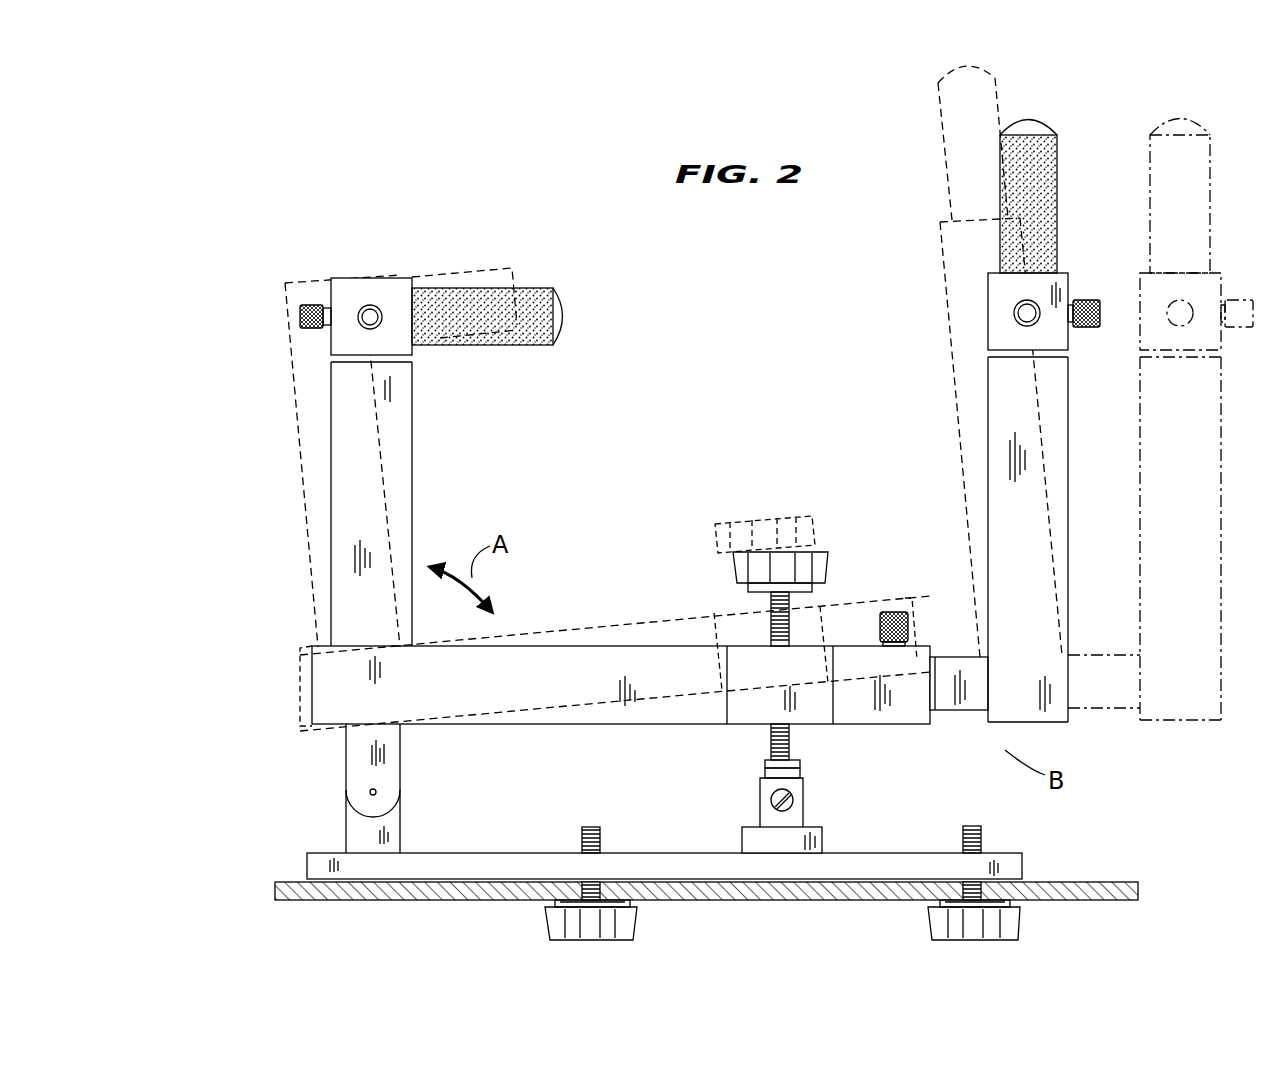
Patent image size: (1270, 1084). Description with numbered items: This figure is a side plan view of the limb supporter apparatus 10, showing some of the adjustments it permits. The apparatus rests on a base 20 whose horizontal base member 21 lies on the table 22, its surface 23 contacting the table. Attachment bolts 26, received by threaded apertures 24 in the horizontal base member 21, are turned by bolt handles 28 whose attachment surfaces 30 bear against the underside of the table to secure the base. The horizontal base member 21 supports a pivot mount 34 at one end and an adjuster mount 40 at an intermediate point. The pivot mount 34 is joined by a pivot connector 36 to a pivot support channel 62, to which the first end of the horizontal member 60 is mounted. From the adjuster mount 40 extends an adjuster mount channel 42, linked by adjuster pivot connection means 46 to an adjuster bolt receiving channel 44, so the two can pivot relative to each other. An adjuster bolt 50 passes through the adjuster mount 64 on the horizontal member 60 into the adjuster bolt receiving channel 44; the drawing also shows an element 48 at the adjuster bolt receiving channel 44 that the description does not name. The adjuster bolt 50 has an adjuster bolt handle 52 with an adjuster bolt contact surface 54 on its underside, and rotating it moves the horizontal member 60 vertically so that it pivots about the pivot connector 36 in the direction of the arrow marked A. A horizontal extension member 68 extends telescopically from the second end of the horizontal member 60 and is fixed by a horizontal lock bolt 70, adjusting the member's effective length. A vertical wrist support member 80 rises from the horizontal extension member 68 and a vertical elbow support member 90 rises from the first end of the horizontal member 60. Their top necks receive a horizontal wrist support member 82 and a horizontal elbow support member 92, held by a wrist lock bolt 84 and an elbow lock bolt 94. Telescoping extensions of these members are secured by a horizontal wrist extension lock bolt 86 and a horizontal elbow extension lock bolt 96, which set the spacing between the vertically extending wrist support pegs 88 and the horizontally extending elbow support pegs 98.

The limb supporter apparatus 10 is at (483, 192).
The base 20 is at (1097, 852).
The horizontal base member 21 is at (297, 862).
The table 22 is at (480, 853).
The upper surface 23 is at (330, 902).
The threaded apertures 24 is at (603, 853).
The attachment bolts 26 is at (592, 828).
The bolt handles 28 is at (550, 925).
The attachment surfaces 30 is at (630, 905).
The pivot mount 34 is at (360, 838).
The pivot connector 36 is at (370, 792).
The adjuster mount 40 is at (745, 835).
The adjuster mount channel 42 is at (803, 810).
The adjuster bolt receiving channel 44 is at (800, 775).
The adjuster pivot connection means 46 is at (793, 800).
The washer 48 is at (765, 765).
The adjuster bolt 50 is at (790, 740).
The adjuster bolt handle 52 is at (826, 552).
The adjuster bolt contact surface 54 is at (812, 588).
The horizontal member 60 is at (580, 675).
The pivot support channel 62 is at (365, 757).
The adjuster mount 64 is at (750, 660).
The horizontal extension member 68 is at (1041, 744).
The horizontal lock bolt 70 is at (900, 612).
The vertical wrist support member 80 is at (1068, 518).
The horizontal wrist support member 82 is at (990, 296).
The wrist lock bolt 84 is at (1030, 320).
The horizontal wrist extension lock bolt 86 is at (1088, 300).
The wrist support peg 88 is at (1057, 165).
The vertical elbow support member 90 is at (343, 528).
The horizontal elbow support member 92 is at (350, 345).
The elbow lock bolt 94 is at (375, 305).
The horizontal elbow extension lock bolt 96 is at (300, 316).
The elbow support peg 98 is at (530, 290).